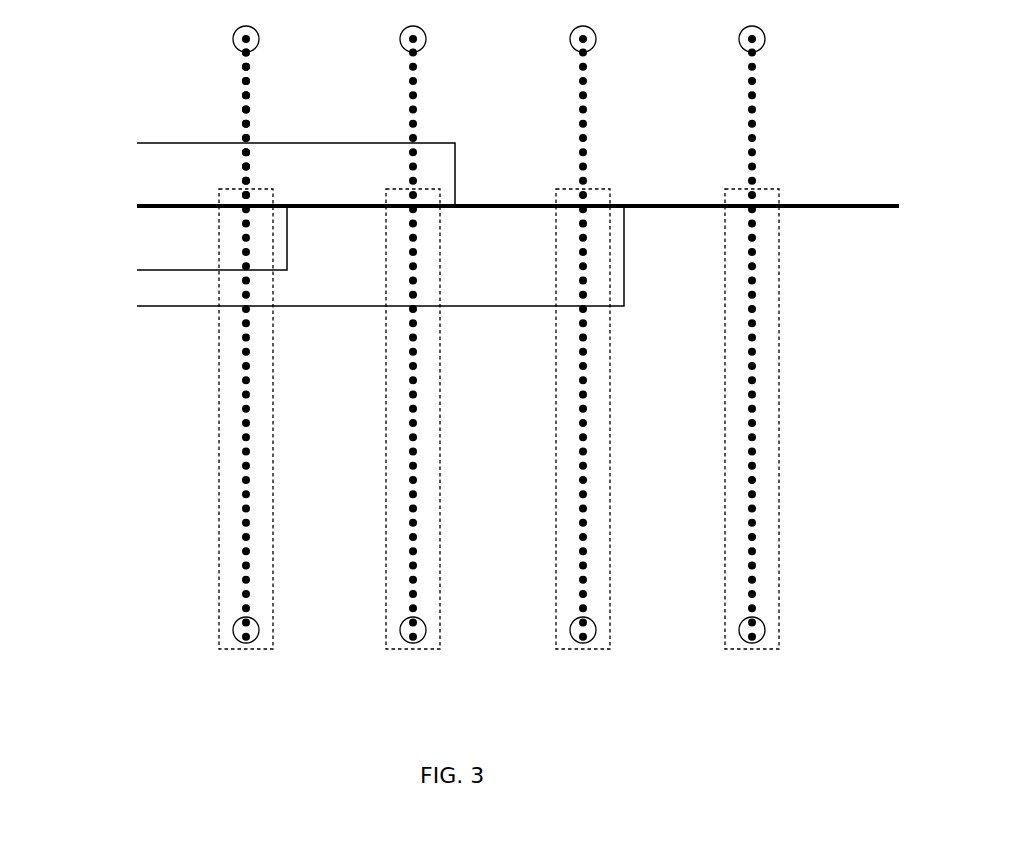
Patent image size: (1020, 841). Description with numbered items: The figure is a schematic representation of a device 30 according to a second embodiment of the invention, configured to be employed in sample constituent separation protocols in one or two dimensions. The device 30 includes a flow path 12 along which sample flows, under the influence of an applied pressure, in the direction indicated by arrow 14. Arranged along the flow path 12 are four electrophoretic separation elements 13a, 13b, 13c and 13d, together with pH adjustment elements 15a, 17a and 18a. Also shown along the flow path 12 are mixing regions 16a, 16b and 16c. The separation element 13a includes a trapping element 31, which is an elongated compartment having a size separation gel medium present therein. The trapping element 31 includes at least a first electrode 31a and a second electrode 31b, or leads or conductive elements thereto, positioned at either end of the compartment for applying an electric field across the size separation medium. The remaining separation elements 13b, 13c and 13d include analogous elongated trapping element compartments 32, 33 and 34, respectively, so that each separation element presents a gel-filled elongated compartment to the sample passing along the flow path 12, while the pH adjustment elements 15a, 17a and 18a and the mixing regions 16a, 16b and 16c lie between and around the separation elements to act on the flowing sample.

The flow path 12 is at (840, 216).
The arrow 14 is at (110, 207).
The electrophoretic separation element 13a is at (238, 194).
The electrophoretic separation element 13b is at (432, 192).
The electrophoretic separation element 13c is at (602, 192).
The electrophoretic separation element 13d is at (784, 180).
The pH adjustment element 15a is at (287, 250).
The mixing region 16a is at (335, 197).
The mixing region 16b is at (510, 194).
The mixing region 16c is at (658, 198).
The pH adjustment element 17a is at (347, 142).
The pH adjustment element 18a is at (624, 257).
The device 30 is at (488, 342).
The trapping element 31 is at (154, 342).
The first electrode 31a is at (219, 218).
The second electrode 31b is at (218, 646).
The trapping element compartment 32 is at (400, 382).
The trapping element compartment 33 is at (570, 382).
The trapping element compartment 34 is at (738, 382).